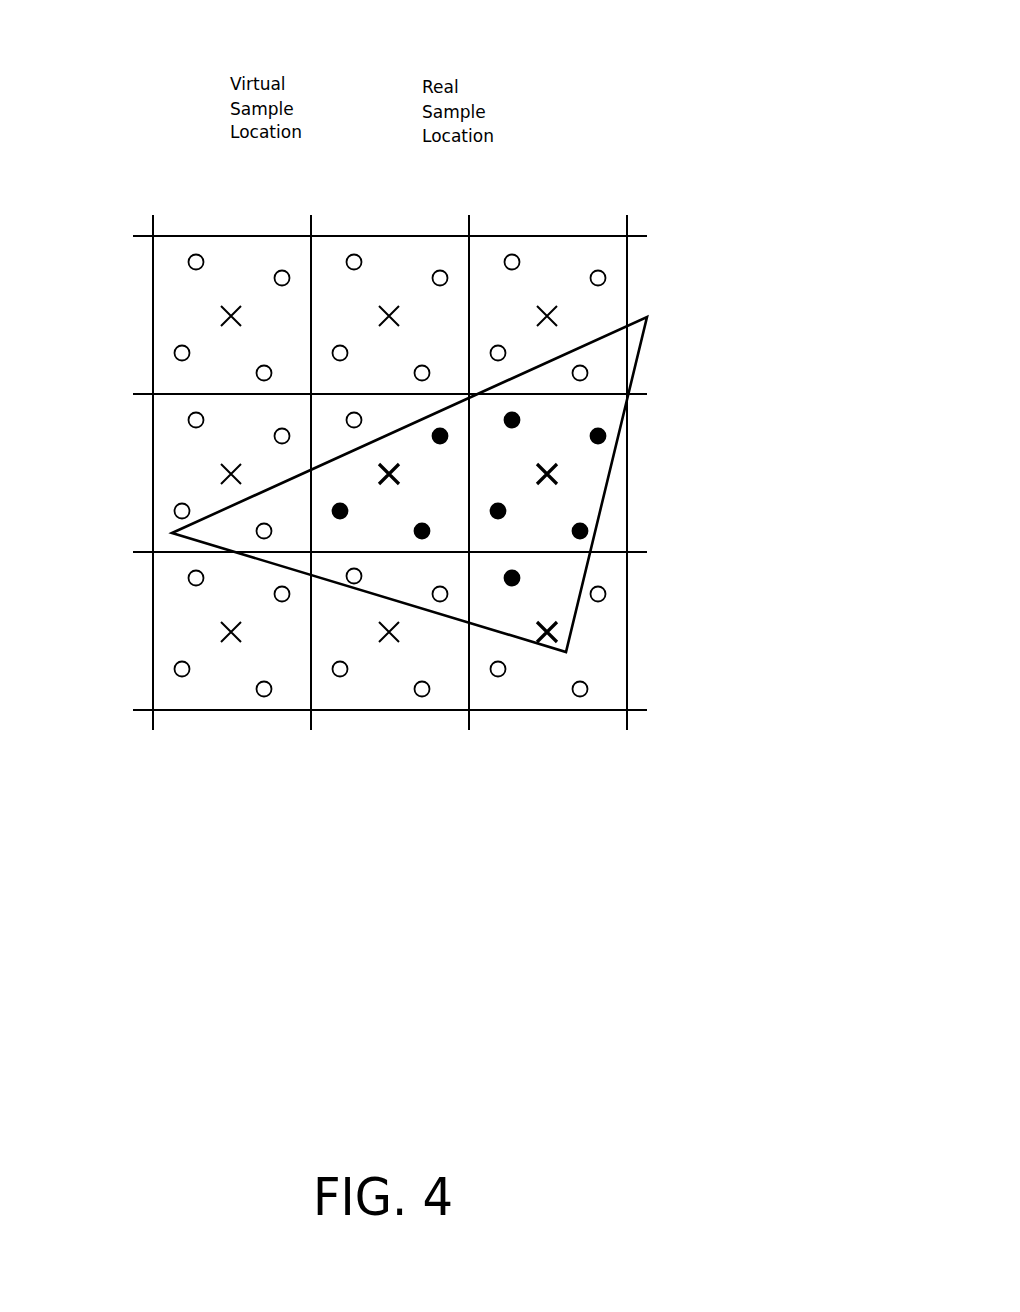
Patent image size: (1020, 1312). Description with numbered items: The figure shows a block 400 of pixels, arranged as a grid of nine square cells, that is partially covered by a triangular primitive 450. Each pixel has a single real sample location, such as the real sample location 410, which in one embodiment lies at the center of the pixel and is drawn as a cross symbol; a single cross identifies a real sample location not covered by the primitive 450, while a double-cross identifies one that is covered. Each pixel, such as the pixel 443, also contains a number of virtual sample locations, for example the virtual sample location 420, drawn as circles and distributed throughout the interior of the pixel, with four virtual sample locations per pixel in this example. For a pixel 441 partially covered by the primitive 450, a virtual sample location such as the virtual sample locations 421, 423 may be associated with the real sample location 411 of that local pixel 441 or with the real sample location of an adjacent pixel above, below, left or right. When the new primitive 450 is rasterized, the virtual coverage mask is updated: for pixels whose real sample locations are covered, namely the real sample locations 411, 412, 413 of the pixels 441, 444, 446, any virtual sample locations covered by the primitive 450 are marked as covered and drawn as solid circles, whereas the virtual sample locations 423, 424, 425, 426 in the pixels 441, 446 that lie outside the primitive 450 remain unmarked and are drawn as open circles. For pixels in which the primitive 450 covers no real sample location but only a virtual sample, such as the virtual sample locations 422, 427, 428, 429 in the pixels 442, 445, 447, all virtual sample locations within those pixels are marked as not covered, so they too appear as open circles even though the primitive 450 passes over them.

The block of pixels 400 is at (341, 367).
The real sample location 410 is at (389, 306).
The virtual sample location 420 is at (352, 254).
The real sample location 411 is at (398, 476).
The real sample location 412 is at (562, 473).
The real sample location 413 is at (560, 631).
The virtual sample location 421 is at (448, 436).
The virtual sample location 422 is at (256, 532).
The virtual sample location 423 is at (354, 412).
The virtual sample location 424 is at (503, 675).
The virtual sample location 425 is at (586, 694).
The virtual sample location 426 is at (606, 594).
The virtual sample location 427 is at (360, 569).
The virtual sample location 428 is at (437, 602).
The virtual sample location 429 is at (586, 369).
The pixel 441 is at (425, 450).
The pixel 442 is at (184, 499).
The pixel 443 is at (342, 264).
The pixel 444 is at (596, 476).
The pixel 445 is at (392, 631).
The pixel 446 is at (606, 665).
The pixel 447 is at (598, 318).
The primitive 450 is at (632, 330).